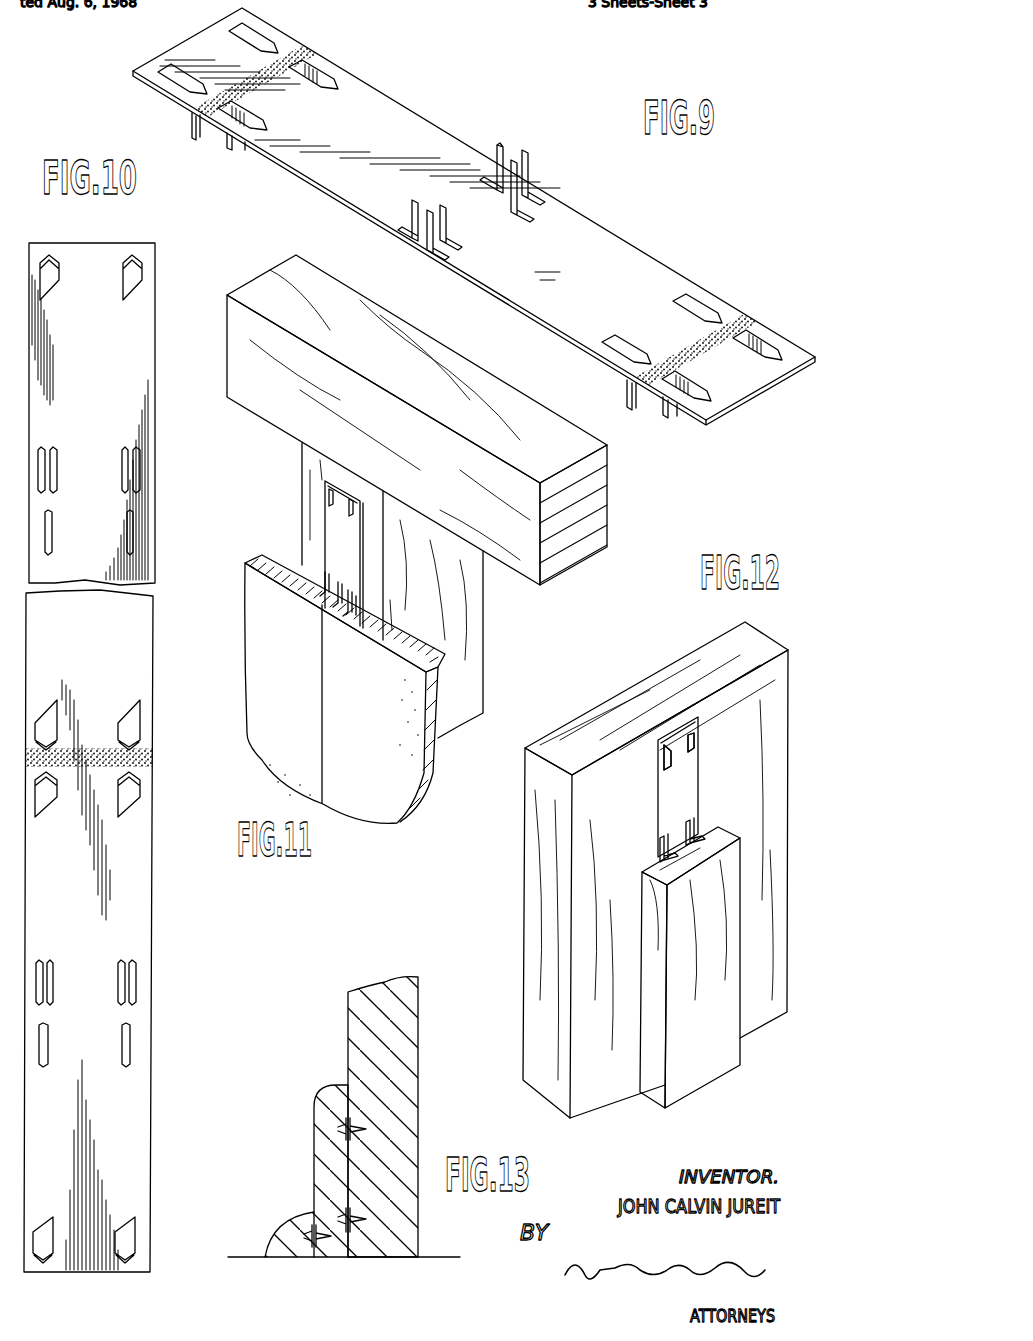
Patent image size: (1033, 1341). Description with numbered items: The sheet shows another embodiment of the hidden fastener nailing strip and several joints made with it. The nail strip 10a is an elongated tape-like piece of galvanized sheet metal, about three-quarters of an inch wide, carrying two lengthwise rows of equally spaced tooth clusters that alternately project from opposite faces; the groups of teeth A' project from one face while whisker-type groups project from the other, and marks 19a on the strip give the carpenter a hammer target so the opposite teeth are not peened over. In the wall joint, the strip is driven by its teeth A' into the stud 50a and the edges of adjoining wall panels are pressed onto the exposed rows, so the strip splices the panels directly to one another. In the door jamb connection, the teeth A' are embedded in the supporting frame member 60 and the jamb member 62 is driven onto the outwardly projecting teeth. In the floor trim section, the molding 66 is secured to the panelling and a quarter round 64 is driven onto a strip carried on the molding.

In FIG. 9, the nail strip 10a is at (406, 100).
In FIG. 12, the nail strip 10a is at (667, 787).
In FIG. 9, the marks 19a is at (300, 47).
In FIG. 10, the marks 19a is at (148, 750).
In FIG. 12, the teeth groups A' is at (705, 745).
In FIG. 11, the stud 50a is at (478, 640).
In FIG. 12, the supporting frame member 60 is at (534, 853).
In FIG. 12, the jamb member 62 is at (648, 947).
In FIG. 13, the molding 66 is at (325, 1112).
In FIG. 13, the quarter round 64 is at (287, 1228).